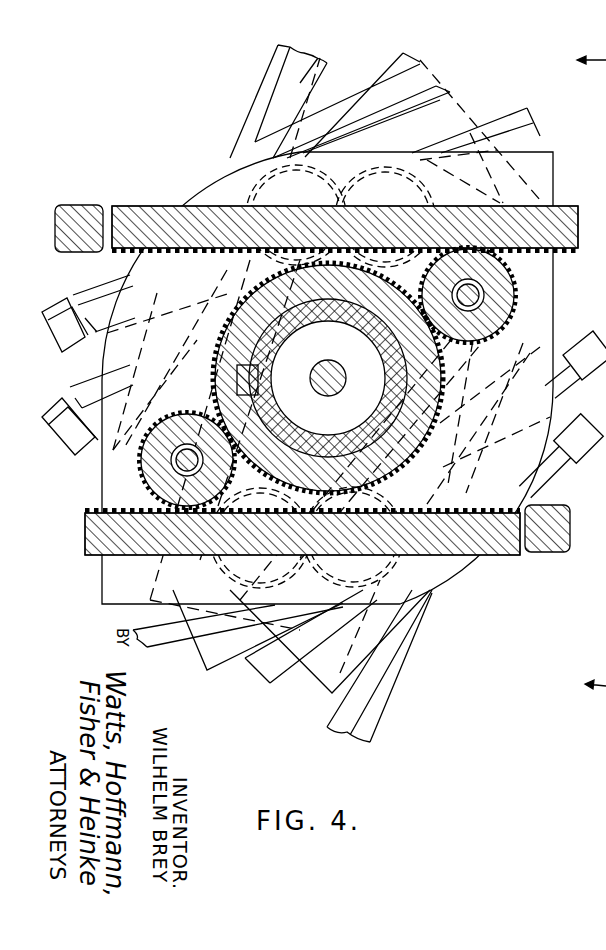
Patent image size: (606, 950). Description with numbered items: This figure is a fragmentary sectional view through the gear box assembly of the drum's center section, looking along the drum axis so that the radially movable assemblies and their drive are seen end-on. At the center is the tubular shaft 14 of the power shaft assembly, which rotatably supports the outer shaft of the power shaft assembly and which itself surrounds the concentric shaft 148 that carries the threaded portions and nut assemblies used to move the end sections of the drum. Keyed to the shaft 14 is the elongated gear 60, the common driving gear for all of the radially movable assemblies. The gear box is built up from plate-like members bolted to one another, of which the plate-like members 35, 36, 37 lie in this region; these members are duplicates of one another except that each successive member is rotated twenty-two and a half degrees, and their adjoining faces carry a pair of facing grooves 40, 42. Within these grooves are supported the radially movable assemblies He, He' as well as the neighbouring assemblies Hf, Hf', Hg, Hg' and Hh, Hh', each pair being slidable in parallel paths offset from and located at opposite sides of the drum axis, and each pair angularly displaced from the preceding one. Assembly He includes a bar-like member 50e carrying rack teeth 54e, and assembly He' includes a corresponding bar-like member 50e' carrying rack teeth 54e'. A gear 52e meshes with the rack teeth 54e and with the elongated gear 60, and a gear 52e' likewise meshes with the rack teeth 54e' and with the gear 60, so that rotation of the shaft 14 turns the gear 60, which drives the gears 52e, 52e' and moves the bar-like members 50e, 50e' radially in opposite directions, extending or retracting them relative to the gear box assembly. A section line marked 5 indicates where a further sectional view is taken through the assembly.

The tubular shaft 14 is at (284, 347).
The shaft 148 is at (328, 394).
The elongated gear 60 is at (328, 378).
The groove 40 is at (140, 256).
The groove 42 is at (100, 508).
The plate-like member 35 is at (134, 598).
The plate-like member 36 is at (225, 672).
The plate-like member 37 is at (333, 674).
The bar-like member 50e is at (279, 546).
The bar-like member 50e' is at (345, 210).
The gear 52e is at (181, 452).
The gear 52e' is at (475, 306).
The rack teeth 54e is at (279, 513).
The rack teeth 54e' is at (359, 263).
The radially movable assembly He is at (545, 546).
The radially movable assembly He' is at (79, 212).
The radially movable assembly Hf is at (561, 456).
The radially movable assembly Hf' is at (421, 124).
The radially movable assembly Hg is at (575, 364).
The radially movable assembly Hg' is at (337, 101).
The radially movable assembly Hh is at (385, 666).
The radially movable assembly Hh' is at (274, 100).
The section line 5 is at (591, 371).